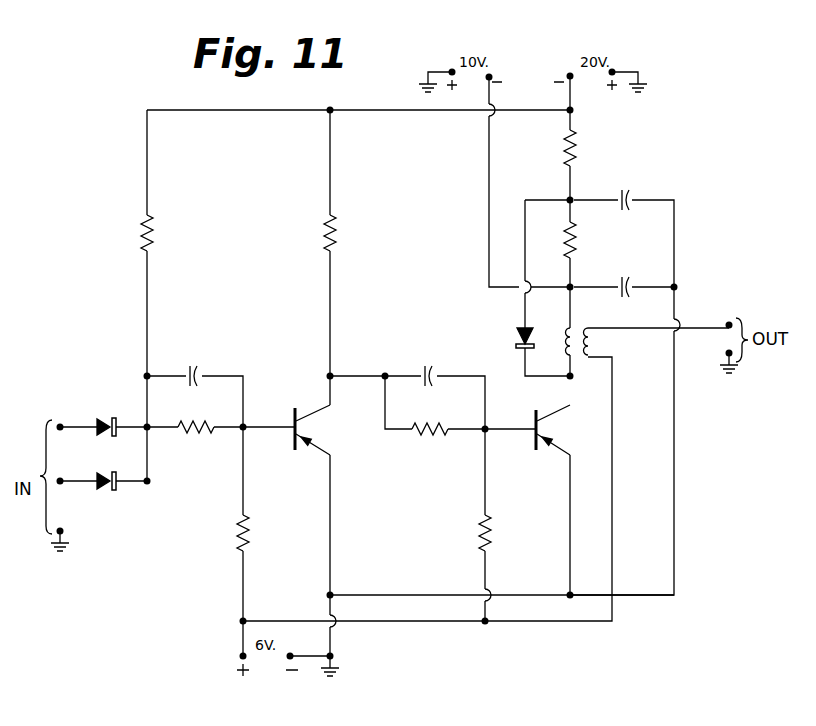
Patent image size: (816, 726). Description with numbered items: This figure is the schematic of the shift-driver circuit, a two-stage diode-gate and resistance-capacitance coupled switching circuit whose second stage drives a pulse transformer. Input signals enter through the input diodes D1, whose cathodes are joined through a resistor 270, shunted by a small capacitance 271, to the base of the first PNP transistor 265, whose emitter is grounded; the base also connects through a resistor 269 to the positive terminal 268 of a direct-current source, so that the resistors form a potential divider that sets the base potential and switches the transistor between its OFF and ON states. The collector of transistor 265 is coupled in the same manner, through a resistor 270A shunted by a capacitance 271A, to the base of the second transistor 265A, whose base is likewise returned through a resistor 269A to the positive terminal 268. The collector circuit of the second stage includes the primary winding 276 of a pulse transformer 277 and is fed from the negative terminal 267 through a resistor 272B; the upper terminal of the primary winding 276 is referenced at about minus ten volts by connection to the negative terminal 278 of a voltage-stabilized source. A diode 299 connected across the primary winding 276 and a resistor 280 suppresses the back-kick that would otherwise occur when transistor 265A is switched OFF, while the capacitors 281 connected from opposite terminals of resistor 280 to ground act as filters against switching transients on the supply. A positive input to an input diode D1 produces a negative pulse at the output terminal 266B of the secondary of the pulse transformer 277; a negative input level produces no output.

The input diode D1 is at (109, 424).
The negative terminal of a voltage-stabilized source 278 is at (489, 72).
The negative terminal 267 is at (570, 73).
The resistor 272B is at (569, 136).
The capacitor 281 is at (628, 195).
The resistor 280 is at (578, 234).
The diode 299 is at (519, 340).
The primary winding 276 is at (565, 345).
The pulse transformer 277 is at (593, 340).
The output terminal 266B is at (726, 323).
The capacitance 271 is at (213, 344).
The capacitance 271A is at (441, 344).
The resistor 270 is at (178, 430).
The resistor 270A is at (427, 452).
The transistor 265 is at (314, 412).
The transistor 265A is at (551, 412).
The resistor 269 is at (250, 525).
The resistor 269A is at (491, 532).
The positive terminal 268 is at (240, 622).